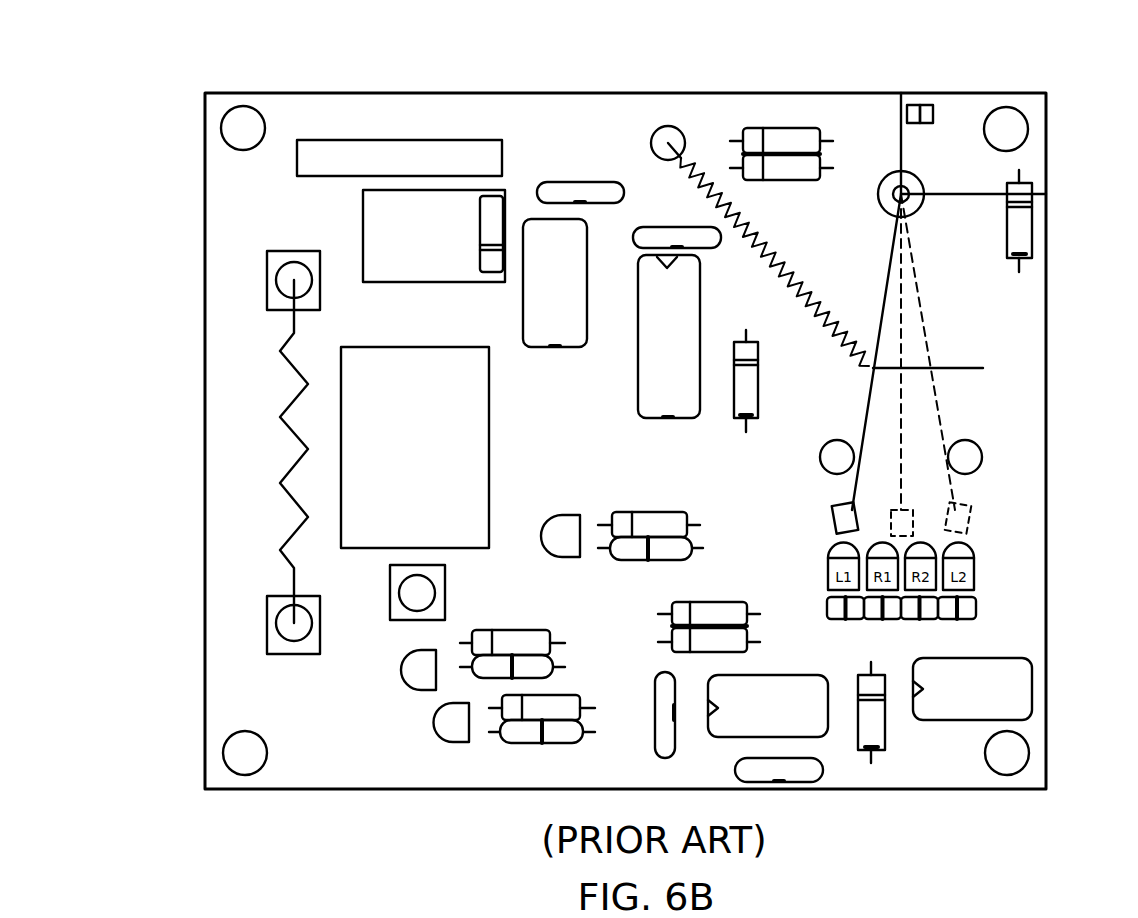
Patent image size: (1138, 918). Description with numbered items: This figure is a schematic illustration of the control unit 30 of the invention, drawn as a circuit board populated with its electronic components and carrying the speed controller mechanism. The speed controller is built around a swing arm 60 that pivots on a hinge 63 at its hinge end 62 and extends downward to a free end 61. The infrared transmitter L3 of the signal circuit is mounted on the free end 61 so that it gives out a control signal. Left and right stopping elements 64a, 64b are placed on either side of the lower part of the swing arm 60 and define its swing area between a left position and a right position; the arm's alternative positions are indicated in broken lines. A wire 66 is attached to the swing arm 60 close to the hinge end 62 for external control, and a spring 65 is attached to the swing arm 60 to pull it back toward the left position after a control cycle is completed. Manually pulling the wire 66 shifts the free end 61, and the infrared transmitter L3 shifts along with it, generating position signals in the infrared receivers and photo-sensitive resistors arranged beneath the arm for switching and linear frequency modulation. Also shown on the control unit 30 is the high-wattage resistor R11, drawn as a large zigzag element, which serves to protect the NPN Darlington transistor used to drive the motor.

The control unit 30 is at (504, 78).
The high-wattage resistor R11 is at (292, 470).
The swing arm 60 is at (891, 314).
The free end 61 is at (850, 491).
The hinge end 62 is at (878, 193).
The hinge 63 is at (910, 191).
The left stopping element 64a is at (835, 453).
The right stopping element 64b is at (982, 458).
The spring 65 is at (812, 300).
The wire 66 is at (960, 368).
The infrared transmitter L3 is at (835, 523).